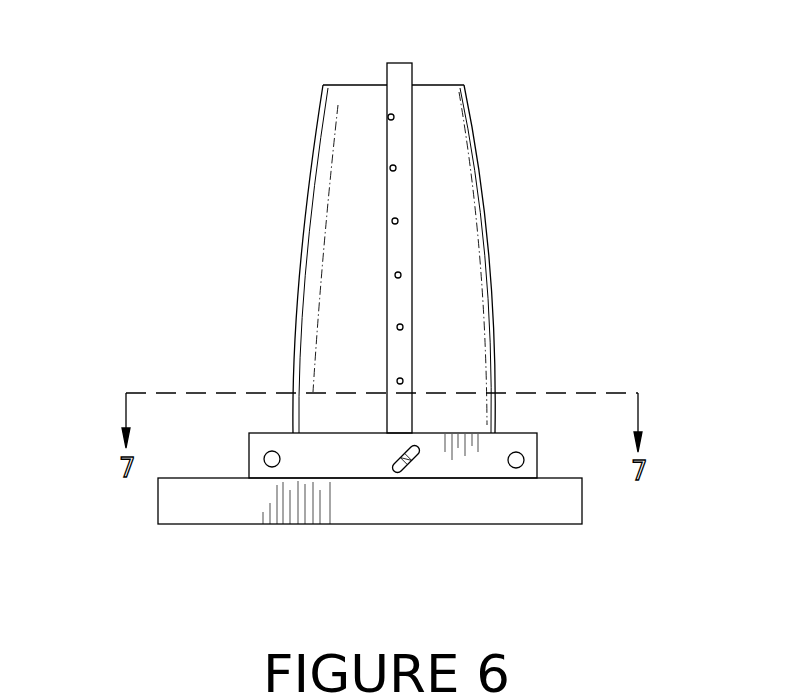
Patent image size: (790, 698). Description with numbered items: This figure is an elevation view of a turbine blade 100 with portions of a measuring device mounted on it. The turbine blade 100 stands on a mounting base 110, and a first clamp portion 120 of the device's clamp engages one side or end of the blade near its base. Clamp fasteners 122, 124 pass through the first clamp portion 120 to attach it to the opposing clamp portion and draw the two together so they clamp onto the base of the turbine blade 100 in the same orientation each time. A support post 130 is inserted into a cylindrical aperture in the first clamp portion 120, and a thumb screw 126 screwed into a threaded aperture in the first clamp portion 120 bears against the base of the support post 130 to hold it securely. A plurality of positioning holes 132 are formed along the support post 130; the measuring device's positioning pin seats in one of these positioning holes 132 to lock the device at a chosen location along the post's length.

The turbine blade 100 is at (300, 258).
The mounting base 110 is at (170, 501).
The first clamp portion 120 is at (275, 432).
The clamp fastener 122 is at (270, 467).
The clamp fastener 124 is at (516, 468).
The thumb screw 126 is at (399, 465).
The support post 130 is at (403, 63).
The positioning holes 132 is at (392, 221).